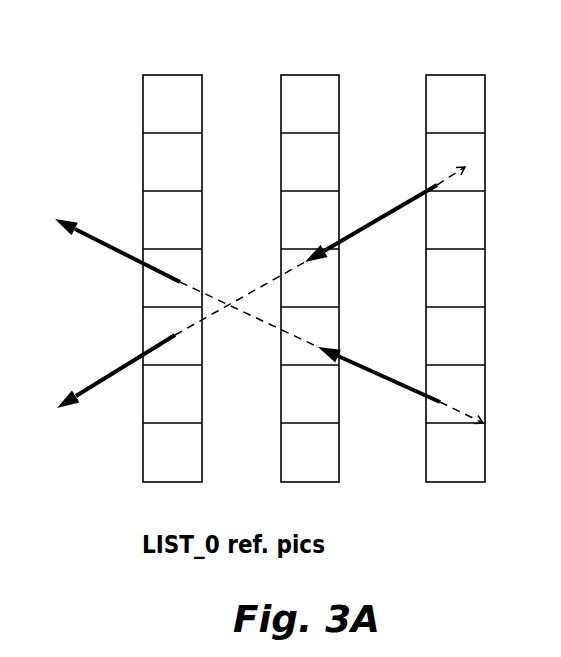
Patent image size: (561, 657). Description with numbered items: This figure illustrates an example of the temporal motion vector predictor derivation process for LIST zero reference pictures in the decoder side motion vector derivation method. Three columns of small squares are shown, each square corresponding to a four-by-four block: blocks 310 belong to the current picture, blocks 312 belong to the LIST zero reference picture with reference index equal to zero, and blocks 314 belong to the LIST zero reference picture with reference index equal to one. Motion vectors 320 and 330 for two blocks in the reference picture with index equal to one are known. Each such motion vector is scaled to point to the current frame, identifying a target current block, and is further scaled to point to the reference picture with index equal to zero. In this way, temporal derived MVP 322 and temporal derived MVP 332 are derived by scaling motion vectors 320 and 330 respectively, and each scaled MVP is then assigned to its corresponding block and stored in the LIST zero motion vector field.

The blocks of the current picture 310 is at (452, 57).
The blocks of LIST_0 reference picture with index equal to 0 312 is at (307, 57).
The blocks of LIST_0 reference picture with index equal to 1 314 is at (177, 57).
The motion vector 320 is at (110, 370).
The temporal derived MVP 322 is at (363, 222).
The motion vector 330 is at (128, 252).
The temporal derived MVP 332 is at (402, 380).